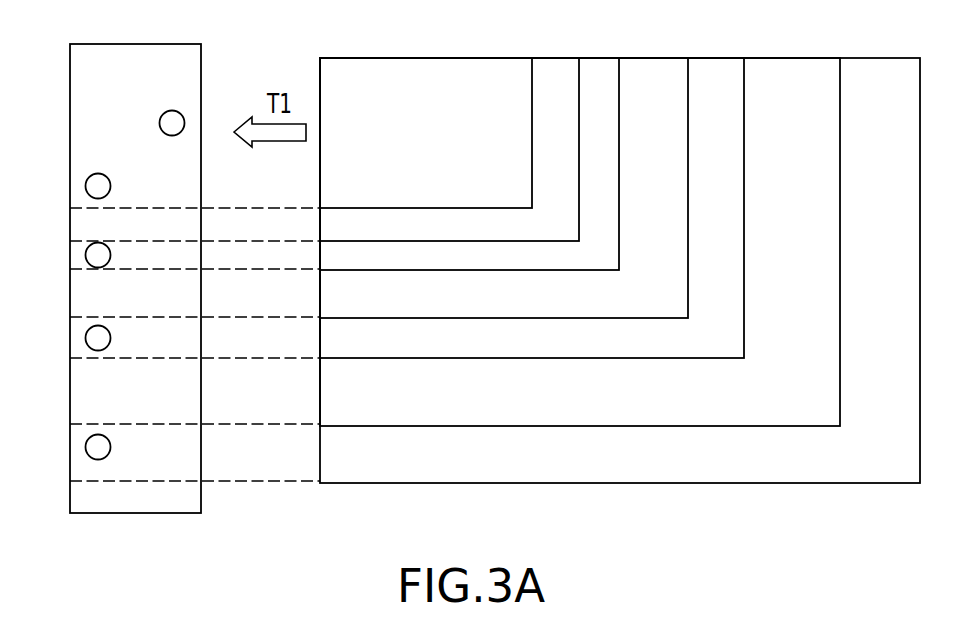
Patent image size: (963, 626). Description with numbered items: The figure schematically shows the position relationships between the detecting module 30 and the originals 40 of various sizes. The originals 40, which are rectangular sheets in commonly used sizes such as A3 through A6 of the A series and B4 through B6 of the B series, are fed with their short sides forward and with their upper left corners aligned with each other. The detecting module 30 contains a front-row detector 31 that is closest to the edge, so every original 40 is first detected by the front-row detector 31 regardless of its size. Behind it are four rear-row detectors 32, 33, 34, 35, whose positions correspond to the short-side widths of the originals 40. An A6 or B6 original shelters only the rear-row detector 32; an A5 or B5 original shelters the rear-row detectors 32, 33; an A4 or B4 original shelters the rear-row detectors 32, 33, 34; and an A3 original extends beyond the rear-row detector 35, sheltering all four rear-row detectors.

The detecting module 30 is at (131, 56).
The front-row detector 31 is at (173, 121).
The rear-row detector 32 is at (96, 185).
The rear-row detector 33 is at (96, 255).
The rear-row detector 34 is at (96, 337).
The rear-row detector 35 is at (96, 446).
The originals 40 is at (428, 73).